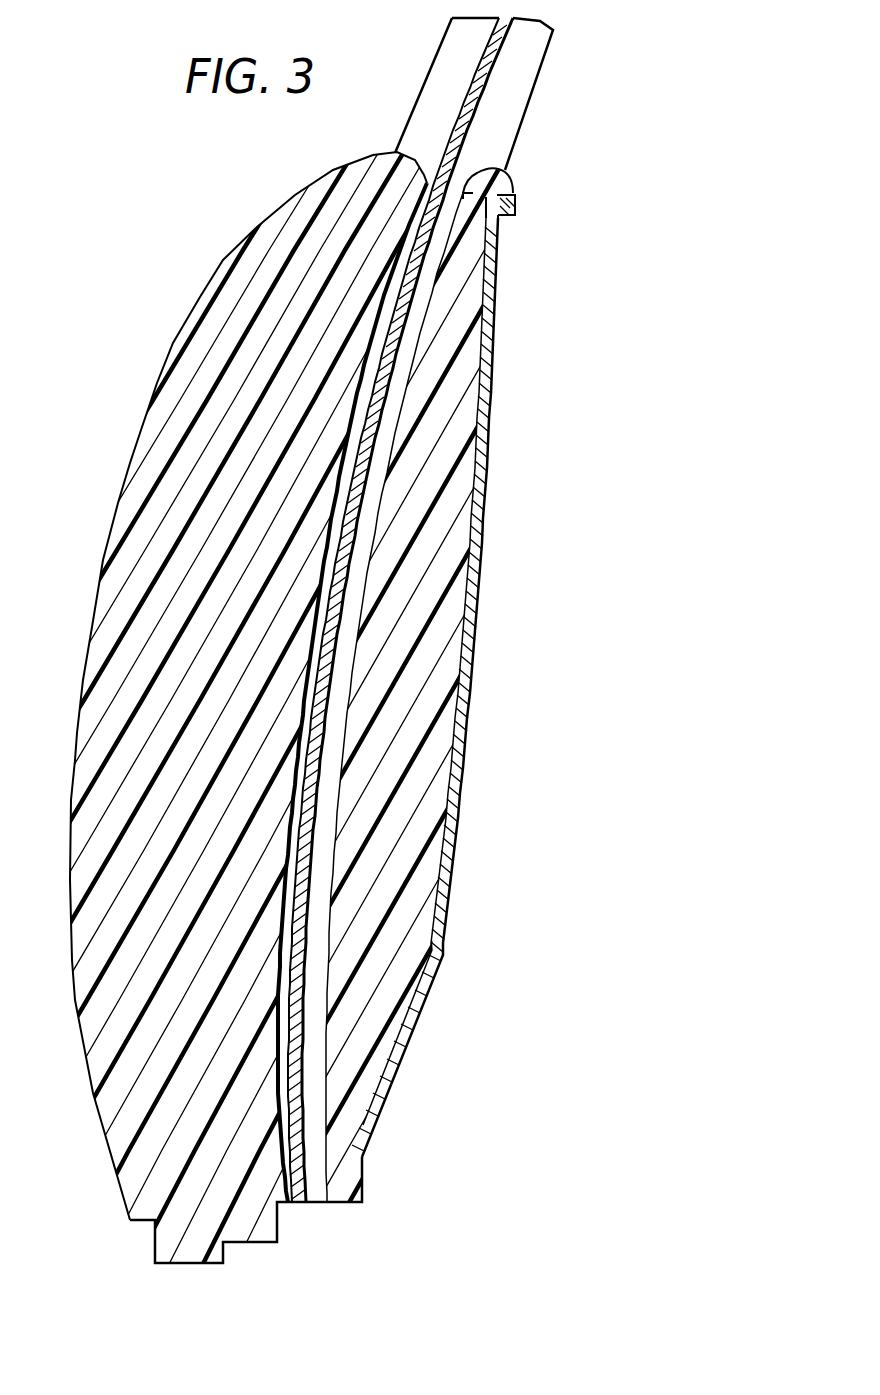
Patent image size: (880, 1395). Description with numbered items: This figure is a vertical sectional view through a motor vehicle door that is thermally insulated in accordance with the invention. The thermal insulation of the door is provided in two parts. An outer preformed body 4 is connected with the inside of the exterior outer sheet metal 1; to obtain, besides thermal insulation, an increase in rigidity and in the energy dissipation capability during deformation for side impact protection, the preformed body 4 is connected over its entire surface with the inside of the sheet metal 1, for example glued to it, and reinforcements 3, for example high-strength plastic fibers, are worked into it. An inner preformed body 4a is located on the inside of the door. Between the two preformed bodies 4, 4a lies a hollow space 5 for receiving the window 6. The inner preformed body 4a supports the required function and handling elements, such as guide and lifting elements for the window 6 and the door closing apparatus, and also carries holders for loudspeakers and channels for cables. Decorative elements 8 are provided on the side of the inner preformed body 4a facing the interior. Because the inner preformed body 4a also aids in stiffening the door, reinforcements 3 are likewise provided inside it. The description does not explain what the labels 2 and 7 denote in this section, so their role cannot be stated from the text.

The outer sheet metal 1 is at (210, 286).
The soft layer 2 is at (188, 457).
The reinforcements 3 is at (150, 760).
The outer preformed body 4 is at (122, 1030).
The inner preformed body 4a is at (355, 1062).
The hollow space 5 is at (375, 375).
The window 6 is at (362, 512).
The upper end portion 7 is at (430, 325).
The decorative elements 8 is at (445, 958).